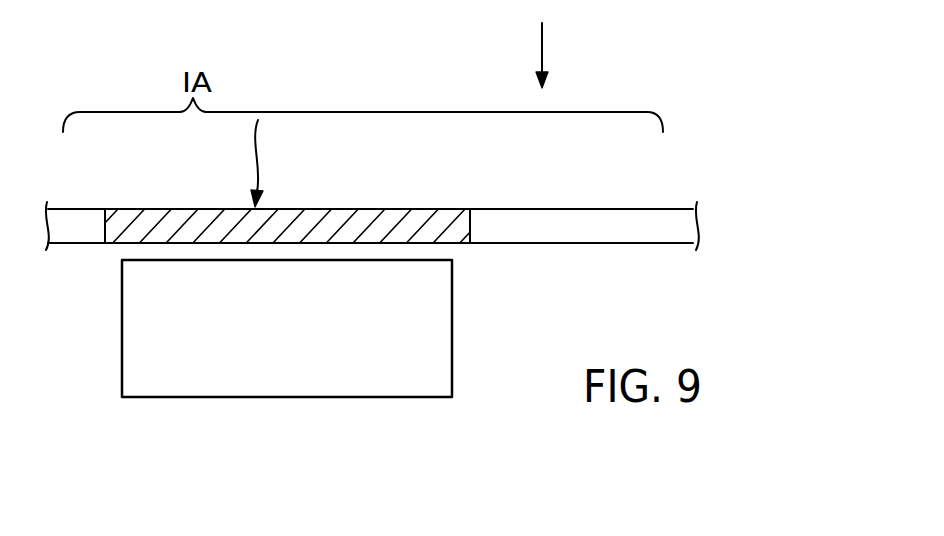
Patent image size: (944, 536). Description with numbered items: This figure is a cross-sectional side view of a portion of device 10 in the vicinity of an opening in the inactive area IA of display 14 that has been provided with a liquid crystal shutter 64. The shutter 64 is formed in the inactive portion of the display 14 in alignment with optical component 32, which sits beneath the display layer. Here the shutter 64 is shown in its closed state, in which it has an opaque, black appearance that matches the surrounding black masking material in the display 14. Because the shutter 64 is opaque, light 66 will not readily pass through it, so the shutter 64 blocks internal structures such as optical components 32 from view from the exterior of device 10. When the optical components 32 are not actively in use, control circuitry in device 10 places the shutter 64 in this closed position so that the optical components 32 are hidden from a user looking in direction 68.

The device 10 is at (747, 47).
The display 14 is at (567, 217).
The optical component 32 is at (452, 323).
The liquid crystal shutter 64 is at (392, 215).
The light 66 is at (258, 157).
The direction 68 is at (542, 43).